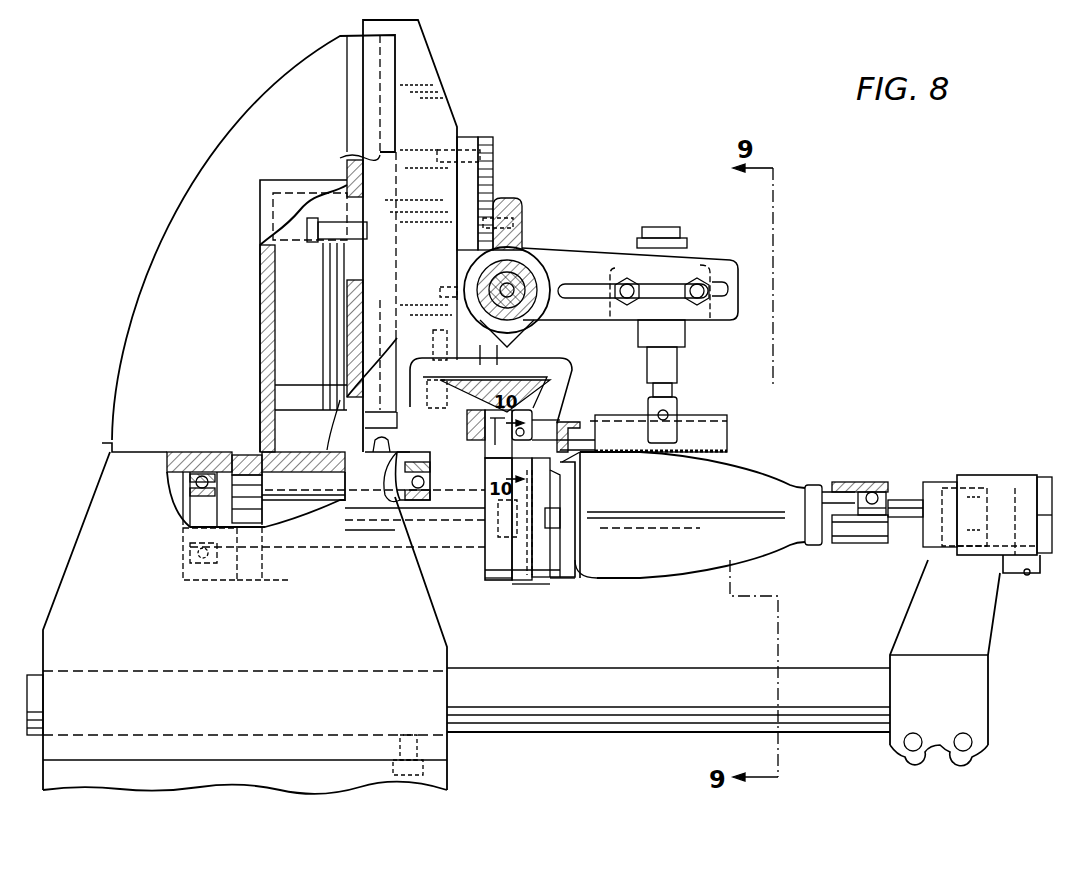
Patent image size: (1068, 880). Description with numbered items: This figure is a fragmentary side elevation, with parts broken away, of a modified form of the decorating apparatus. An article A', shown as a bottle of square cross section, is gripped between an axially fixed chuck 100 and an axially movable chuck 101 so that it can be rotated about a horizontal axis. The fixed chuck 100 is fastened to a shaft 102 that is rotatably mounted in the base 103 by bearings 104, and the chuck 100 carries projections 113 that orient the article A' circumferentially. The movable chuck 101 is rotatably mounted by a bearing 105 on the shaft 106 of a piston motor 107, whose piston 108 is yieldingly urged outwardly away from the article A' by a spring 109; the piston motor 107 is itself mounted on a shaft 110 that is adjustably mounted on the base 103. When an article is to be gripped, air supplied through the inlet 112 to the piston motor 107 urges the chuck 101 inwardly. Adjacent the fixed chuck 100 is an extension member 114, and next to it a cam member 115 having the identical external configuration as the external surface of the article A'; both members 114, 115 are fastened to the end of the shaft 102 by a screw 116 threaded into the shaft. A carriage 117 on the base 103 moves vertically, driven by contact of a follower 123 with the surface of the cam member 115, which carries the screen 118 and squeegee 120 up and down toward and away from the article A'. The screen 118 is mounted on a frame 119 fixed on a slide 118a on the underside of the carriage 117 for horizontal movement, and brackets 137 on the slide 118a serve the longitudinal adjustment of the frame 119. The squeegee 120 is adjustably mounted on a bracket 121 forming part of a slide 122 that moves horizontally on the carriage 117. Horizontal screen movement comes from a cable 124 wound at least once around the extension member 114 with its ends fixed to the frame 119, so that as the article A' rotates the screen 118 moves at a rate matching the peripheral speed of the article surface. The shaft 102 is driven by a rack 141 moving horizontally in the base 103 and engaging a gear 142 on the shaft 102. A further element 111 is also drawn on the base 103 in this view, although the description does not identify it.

The carriage 117 is at (424, 72).
The slide 122 is at (505, 240).
The bracket 121 is at (600, 255).
The squeegee 120 is at (690, 415).
The frame 119 is at (770, 420).
The screen 118 is at (735, 445).
The slide 118a is at (545, 372).
The bracket 137 is at (545, 425).
The article A' is at (698, 505).
The axially movable chuck 101 is at (850, 481).
The bearing 105 is at (875, 492).
The shaft 106 is at (905, 505).
The piston motor 107 is at (985, 470).
The piston 108 is at (1000, 490).
The spring 109 is at (975, 485).
The inlet 112 is at (1025, 576).
The shaft 110 is at (630, 668).
The base 103 is at (312, 662).
The bolt 111 is at (447, 763).
The bearings 104 is at (205, 465).
The rack 141 is at (243, 460).
The gear 142 is at (245, 522).
The shaft 102 is at (318, 497).
The follower 123 is at (485, 458).
The screw 116 is at (566, 503).
The projections 113 is at (585, 578).
The cam member 115 is at (497, 580).
The cable 124 is at (540, 580).
The extension member 114 is at (545, 582).
The axially fixed chuck 100 is at (562, 580).